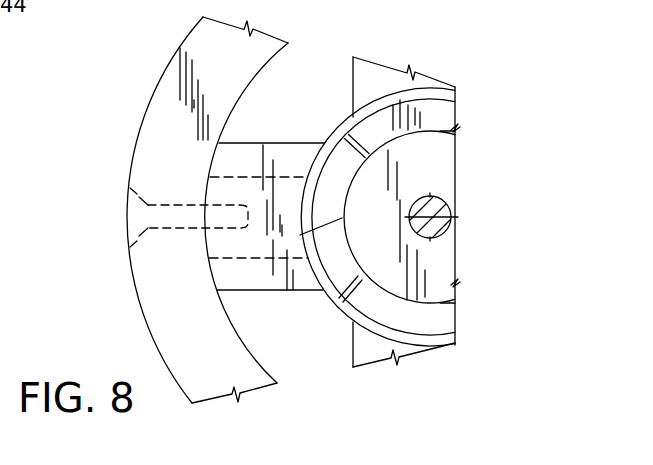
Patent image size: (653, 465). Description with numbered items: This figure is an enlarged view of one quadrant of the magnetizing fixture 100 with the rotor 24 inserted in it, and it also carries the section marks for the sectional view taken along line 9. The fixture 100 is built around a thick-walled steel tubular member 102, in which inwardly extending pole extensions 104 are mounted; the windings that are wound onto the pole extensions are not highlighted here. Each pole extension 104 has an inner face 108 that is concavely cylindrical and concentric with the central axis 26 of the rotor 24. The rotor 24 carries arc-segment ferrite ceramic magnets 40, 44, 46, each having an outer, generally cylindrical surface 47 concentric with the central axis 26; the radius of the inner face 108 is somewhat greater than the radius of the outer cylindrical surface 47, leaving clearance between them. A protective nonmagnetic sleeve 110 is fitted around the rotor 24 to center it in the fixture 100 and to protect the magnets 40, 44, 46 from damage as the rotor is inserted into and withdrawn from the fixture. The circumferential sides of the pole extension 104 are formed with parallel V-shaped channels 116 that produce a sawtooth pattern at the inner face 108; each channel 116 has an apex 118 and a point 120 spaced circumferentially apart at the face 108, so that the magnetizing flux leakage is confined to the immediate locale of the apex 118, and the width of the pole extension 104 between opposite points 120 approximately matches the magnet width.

The magnetizing fixture 100 is at (123, 125).
The thick-walled steel tubular member 102 is at (167, 87).
The pole extension 104 is at (388, 68).
The apex 118 is at (232, 176).
The point 120 is at (248, 142).
The V-shaped channel 116 is at (286, 289).
The outer cylindrical surface 47 is at (318, 163).
The protective nonmagnetic sleeve 110 is at (352, 117).
The ferrite ceramic magnet 46 is at (357, 175).
The rotor 24 is at (458, 118).
The ferrite ceramic magnet 40 is at (440, 103).
The ferrite ceramic magnet 44 is at (453, 318).
The inner face 108 is at (338, 218).
The central axis 26 is at (441, 232).
The section line 9- 9 is at (320, 130).